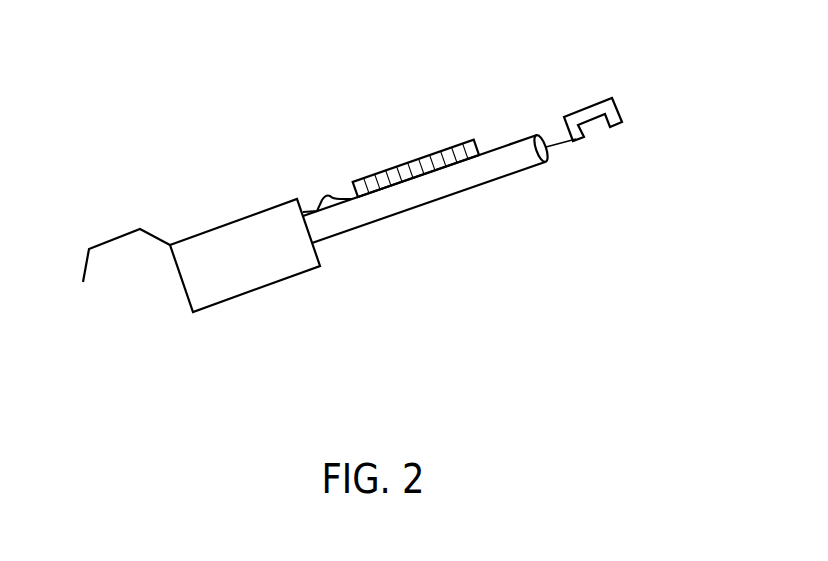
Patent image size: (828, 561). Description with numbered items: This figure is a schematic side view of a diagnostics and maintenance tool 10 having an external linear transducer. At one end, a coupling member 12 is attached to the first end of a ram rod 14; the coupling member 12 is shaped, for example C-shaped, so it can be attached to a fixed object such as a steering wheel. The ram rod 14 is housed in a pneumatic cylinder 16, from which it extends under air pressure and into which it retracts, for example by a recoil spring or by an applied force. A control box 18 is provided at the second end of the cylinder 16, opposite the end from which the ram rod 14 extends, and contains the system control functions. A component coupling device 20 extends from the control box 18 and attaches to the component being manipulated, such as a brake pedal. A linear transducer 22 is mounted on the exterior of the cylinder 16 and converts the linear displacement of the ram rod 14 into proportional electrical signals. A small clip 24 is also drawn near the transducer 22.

The diagnostics and maintenance tool 10 is at (176, 92).
The coupling member 12 is at (622, 119).
The ram rod 14 is at (560, 143).
The pneumatic cylinder 16 is at (432, 201).
The control box 18 is at (258, 290).
The component coupling device 20 is at (110, 238).
The linear transducer 22 is at (415, 160).
The retaining clip 24 is at (322, 194).